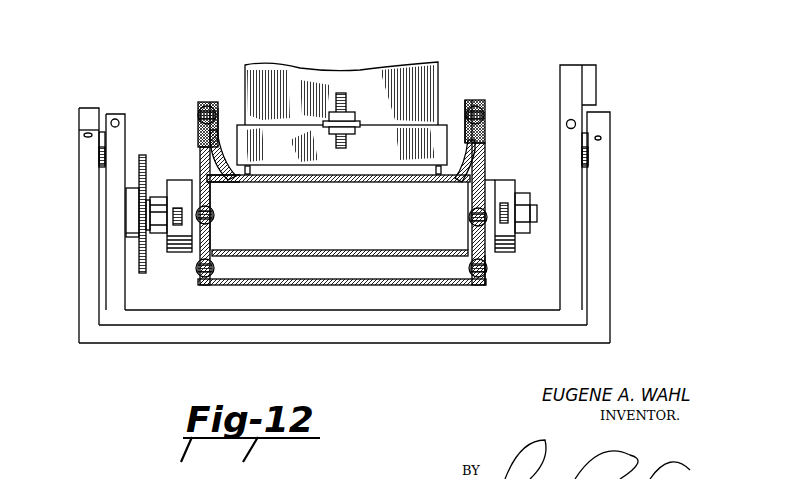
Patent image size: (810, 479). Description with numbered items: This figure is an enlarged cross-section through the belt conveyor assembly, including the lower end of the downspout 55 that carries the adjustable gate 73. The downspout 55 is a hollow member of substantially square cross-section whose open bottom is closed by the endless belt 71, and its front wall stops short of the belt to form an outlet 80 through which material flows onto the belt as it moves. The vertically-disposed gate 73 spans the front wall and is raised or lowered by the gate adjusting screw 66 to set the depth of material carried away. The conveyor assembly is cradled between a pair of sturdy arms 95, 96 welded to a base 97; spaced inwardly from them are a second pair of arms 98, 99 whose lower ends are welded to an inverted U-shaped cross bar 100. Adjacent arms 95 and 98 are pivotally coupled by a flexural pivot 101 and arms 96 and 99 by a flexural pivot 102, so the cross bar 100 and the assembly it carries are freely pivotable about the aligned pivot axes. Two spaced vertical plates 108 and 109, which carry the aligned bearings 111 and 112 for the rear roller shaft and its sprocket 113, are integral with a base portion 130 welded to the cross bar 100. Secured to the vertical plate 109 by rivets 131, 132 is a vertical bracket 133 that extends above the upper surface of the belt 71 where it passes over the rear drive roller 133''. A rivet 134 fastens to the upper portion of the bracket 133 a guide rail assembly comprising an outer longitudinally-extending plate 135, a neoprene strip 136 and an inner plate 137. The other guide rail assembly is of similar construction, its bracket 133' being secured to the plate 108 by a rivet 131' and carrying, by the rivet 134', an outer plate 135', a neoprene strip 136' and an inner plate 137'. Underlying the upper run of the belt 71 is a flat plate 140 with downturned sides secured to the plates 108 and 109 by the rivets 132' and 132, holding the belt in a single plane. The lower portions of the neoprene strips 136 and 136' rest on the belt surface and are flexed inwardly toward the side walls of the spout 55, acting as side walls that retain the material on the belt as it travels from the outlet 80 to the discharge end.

The arm 96 is at (79, 108).
The arm 99 is at (115, 112).
The flexural pivot 102 is at (99, 148).
The base 97 is at (108, 335).
The cross bar 100 is at (548, 297).
The arm 98 is at (570, 65).
The arm 95 is at (612, 162).
The flexural pivot 101 is at (588, 147).
The sprocket 113 is at (141, 155).
The bearing 112 is at (170, 180).
The bearing 111 is at (515, 192).
The rivet 134 is at (185, 109).
The neoprene strip 136 is at (208, 163).
The outer plate 135 is at (191, 71).
The inner plate 137 is at (244, 84).
The rear drive roller 133'' is at (191, 147).
The rivet 134' is at (497, 108).
The vertical bracket 133' is at (508, 192).
The outer plate 135' is at (505, 120).
The neoprene strip 136' is at (499, 161).
The inner plate 137' is at (486, 97).
The rivet 132 is at (161, 291).
The rivet 131 is at (171, 327).
The rivet 132' is at (514, 242).
The vertical plate 108 is at (472, 265).
The rivet 131' is at (512, 314).
The outlet 80 is at (303, 180).
The flat plate 140 is at (232, 185).
The endless belt 71 is at (405, 180).
The vertical bracket 133 is at (270, 216).
The vertical plate 109 is at (213, 250).
The base portion 130 is at (397, 285).
The gate 73 is at (405, 130).
The downspout 55 is at (392, 68).
The gate adjusting screw 66 is at (340, 93).